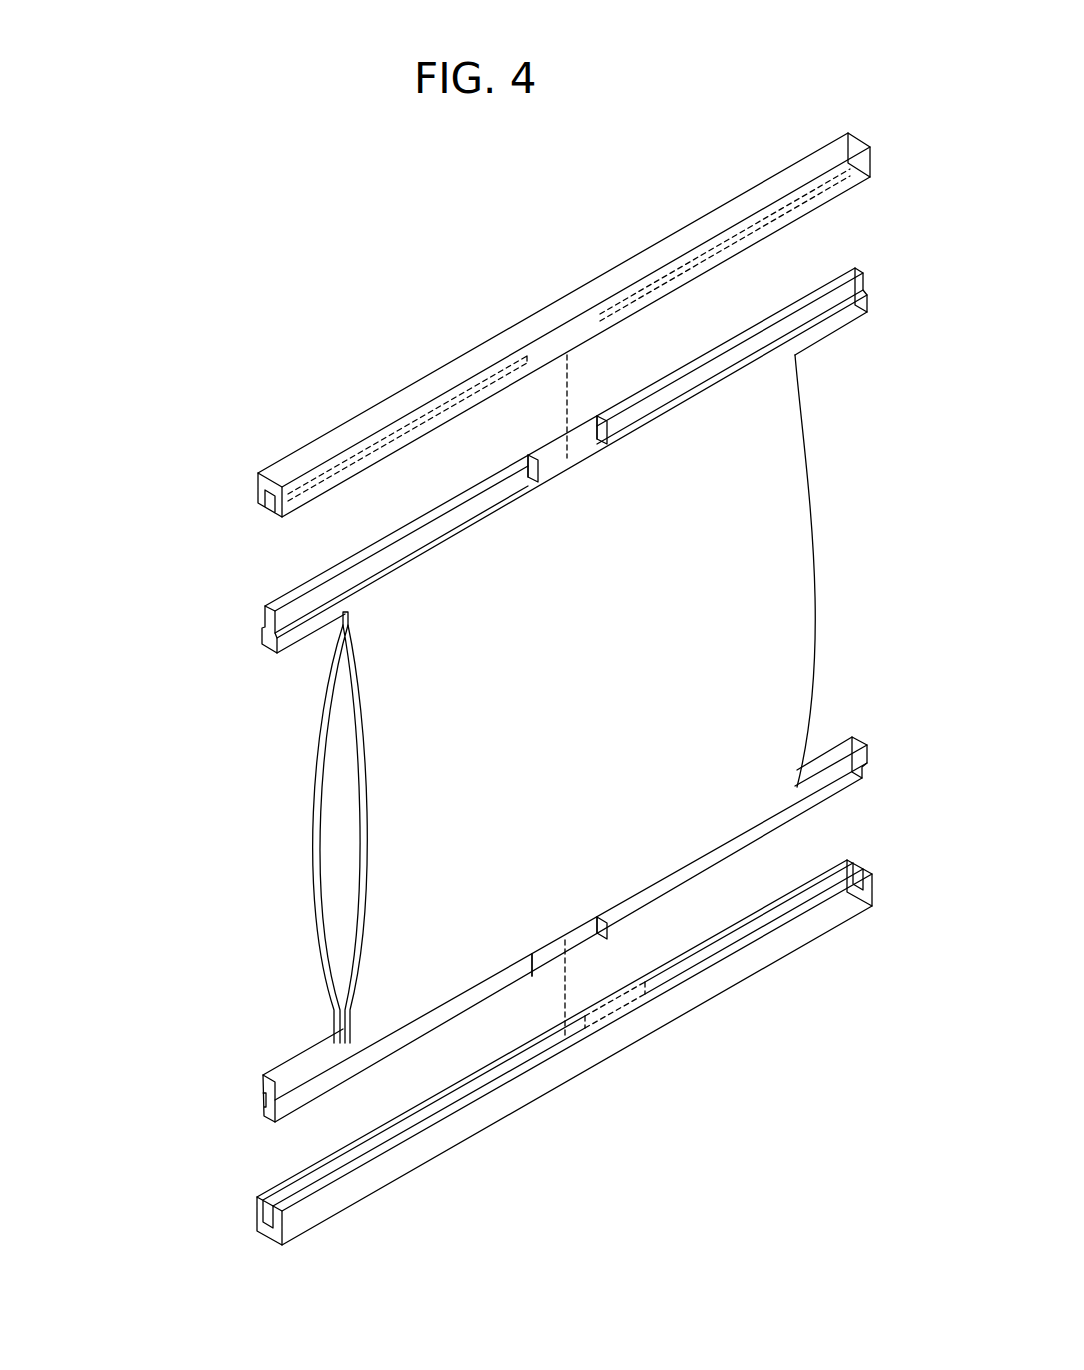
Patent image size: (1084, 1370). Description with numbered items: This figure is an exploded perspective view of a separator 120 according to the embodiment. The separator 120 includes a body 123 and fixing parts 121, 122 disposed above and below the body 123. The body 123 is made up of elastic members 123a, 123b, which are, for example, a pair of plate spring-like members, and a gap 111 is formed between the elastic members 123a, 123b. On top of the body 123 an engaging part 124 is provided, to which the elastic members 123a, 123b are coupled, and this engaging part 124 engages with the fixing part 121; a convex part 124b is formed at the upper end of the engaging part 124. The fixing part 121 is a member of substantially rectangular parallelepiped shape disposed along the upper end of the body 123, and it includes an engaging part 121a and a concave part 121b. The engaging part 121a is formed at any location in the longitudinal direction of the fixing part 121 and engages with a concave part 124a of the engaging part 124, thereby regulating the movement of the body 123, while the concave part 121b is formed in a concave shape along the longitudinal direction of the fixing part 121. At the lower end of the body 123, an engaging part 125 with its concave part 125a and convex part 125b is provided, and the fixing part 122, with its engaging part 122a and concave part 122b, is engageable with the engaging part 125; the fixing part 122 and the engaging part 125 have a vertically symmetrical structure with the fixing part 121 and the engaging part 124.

The separator 120 is at (122, 213).
The fixing part 121 is at (487, 326).
The engaging part 121a is at (580, 340).
The concave part 121b is at (262, 508).
The fixing part 122 is at (488, 1052).
The engaging part 122a is at (590, 1024).
The concave part 122b is at (262, 1225).
The body 123 is at (531, 699).
The elastic member 123a is at (770, 615).
The elastic member 123b is at (318, 740).
The gap 111 is at (340, 800).
The engaging part 124 is at (480, 470).
The concave part 124a is at (545, 466).
The convex part 124b is at (262, 632).
The engaging part 125 is at (480, 944).
The concave part 125a is at (580, 935).
The convex part 125b is at (265, 1112).